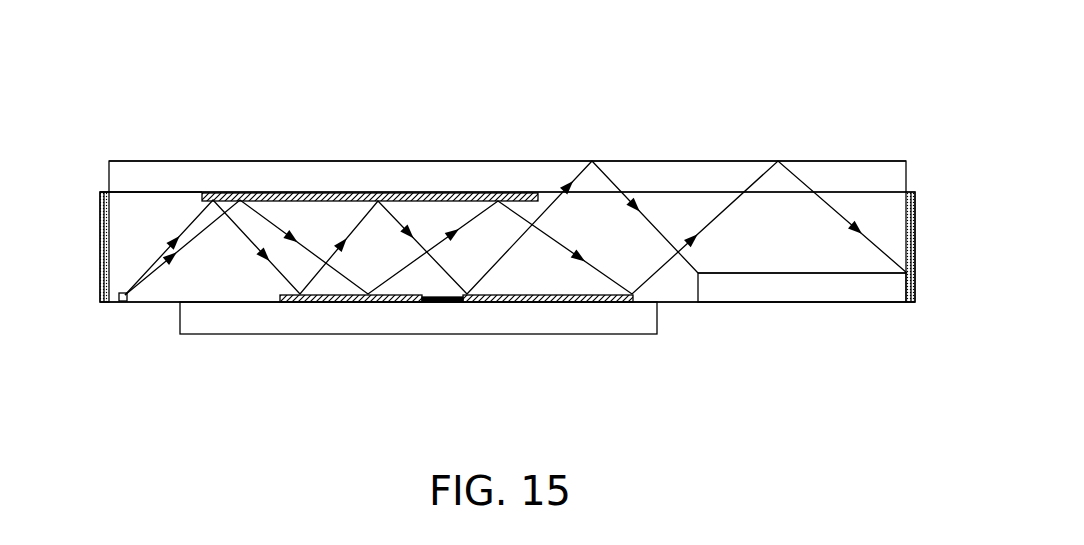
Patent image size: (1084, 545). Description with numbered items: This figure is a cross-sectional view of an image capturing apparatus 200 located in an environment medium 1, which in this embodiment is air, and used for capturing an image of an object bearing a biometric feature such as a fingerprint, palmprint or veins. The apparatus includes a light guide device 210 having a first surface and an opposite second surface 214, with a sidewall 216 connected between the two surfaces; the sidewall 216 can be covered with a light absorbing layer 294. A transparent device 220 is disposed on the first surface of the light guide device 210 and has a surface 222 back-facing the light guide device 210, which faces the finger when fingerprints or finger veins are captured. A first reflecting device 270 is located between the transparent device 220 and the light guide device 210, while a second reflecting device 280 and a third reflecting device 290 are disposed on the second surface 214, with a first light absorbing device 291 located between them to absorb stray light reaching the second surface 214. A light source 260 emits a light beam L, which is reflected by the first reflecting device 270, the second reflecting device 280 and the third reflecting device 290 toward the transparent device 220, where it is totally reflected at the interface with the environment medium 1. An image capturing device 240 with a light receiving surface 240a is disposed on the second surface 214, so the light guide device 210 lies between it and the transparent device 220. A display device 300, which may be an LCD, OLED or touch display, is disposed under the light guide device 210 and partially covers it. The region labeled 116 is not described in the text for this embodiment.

The environment medium 1 is at (849, 67).
The light-transmitting region of cover 116 is at (135, 186).
The image capturing apparatus 200 is at (903, 424).
The light guide device 210 is at (127, 237).
The second surface 214 is at (243, 306).
The sidewall 216 is at (95, 269).
The transparent device 220 is at (823, 172).
The surface 222 is at (853, 157).
The image capturing device 240 is at (771, 293).
The light receiving surface 240a is at (790, 269).
The light source 260 is at (120, 303).
The first reflecting device 270 is at (355, 193).
The second reflecting device 280 is at (345, 303).
The third reflecting device 290 is at (540, 303).
The first light absorbing device 291 is at (440, 303).
The light absorbing layer 294 is at (103, 303).
The display device 300 is at (589, 320).
The light beam L is at (160, 258).